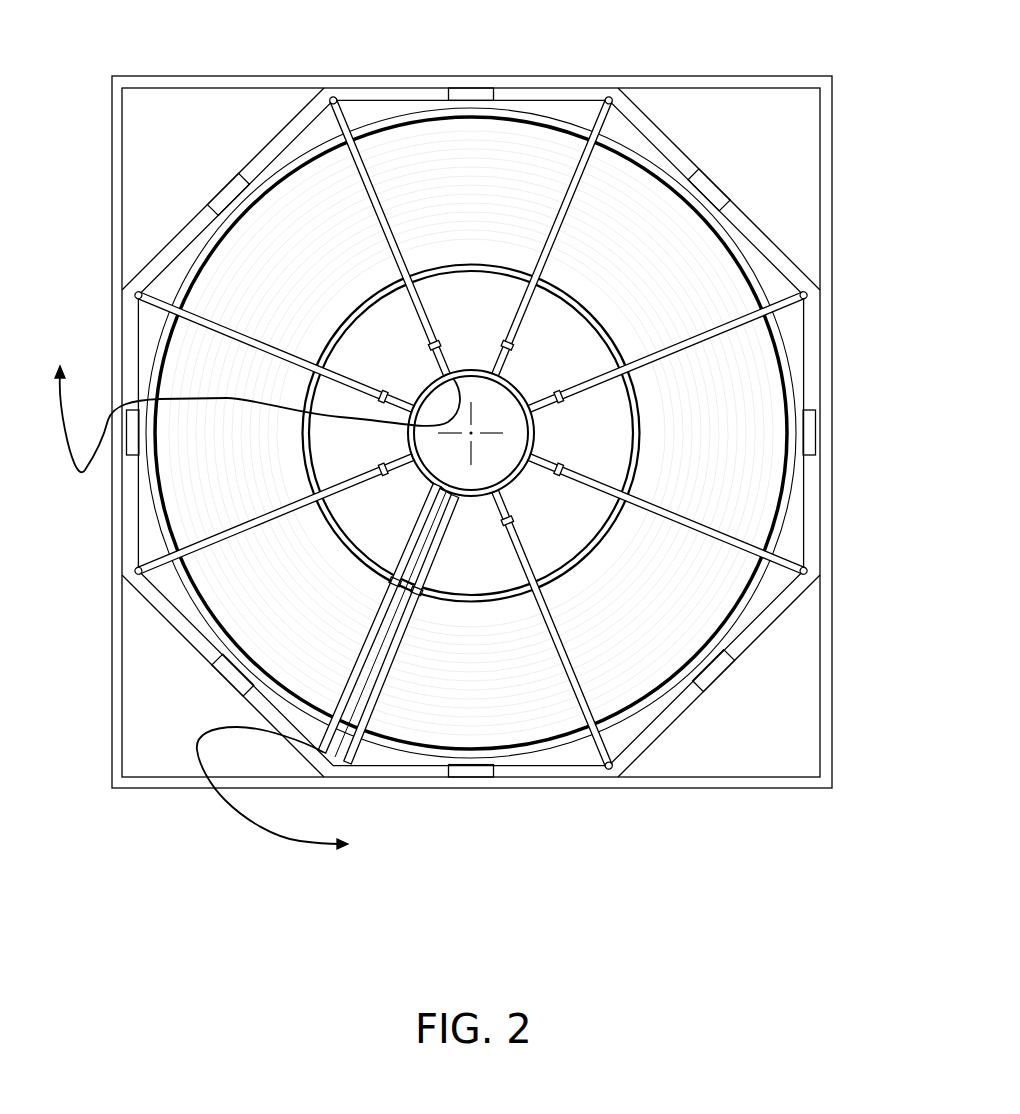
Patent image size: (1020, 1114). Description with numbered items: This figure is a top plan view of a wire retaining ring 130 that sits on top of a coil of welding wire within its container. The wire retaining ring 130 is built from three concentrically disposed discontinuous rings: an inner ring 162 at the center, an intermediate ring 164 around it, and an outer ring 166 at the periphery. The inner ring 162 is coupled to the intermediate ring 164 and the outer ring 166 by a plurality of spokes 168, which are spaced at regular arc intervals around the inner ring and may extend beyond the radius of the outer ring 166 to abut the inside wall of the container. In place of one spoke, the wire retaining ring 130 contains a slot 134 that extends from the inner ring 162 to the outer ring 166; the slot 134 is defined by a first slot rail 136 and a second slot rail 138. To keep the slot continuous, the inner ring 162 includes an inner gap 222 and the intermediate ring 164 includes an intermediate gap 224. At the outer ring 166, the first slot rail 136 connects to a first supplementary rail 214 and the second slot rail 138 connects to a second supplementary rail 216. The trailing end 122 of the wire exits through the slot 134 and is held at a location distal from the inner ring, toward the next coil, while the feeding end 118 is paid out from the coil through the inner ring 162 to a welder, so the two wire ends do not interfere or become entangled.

The feeding end 118 is at (85, 472).
The trailing end 122 is at (223, 800).
The wire retaining ring 130 is at (412, 675).
The slot 134 is at (423, 548).
The first slot rail 136 is at (440, 534).
The second slot rail 138 is at (343, 702).
The inner ring 162 is at (520, 390).
The intermediate ring 164 is at (512, 268).
The outer ring 166 is at (532, 128).
The spokes 168 is at (713, 334).
The first supplementary rail 214 is at (320, 752).
The second supplementary rail 216 is at (360, 757).
The inner gap 222 is at (448, 488).
The intermediate gap 224 is at (410, 577).